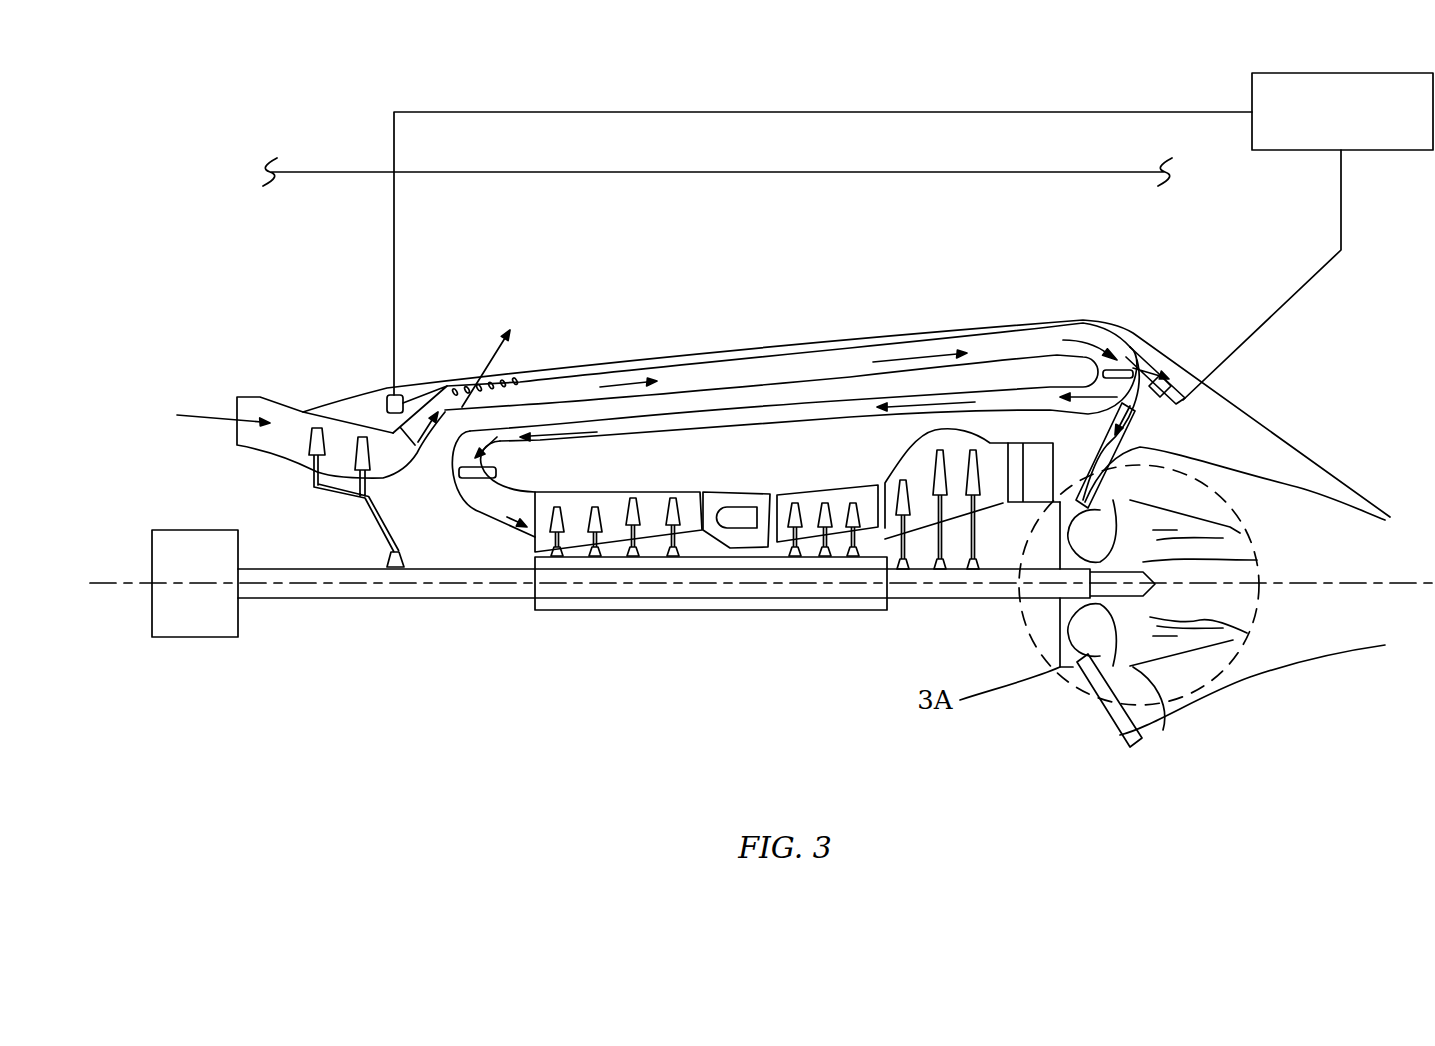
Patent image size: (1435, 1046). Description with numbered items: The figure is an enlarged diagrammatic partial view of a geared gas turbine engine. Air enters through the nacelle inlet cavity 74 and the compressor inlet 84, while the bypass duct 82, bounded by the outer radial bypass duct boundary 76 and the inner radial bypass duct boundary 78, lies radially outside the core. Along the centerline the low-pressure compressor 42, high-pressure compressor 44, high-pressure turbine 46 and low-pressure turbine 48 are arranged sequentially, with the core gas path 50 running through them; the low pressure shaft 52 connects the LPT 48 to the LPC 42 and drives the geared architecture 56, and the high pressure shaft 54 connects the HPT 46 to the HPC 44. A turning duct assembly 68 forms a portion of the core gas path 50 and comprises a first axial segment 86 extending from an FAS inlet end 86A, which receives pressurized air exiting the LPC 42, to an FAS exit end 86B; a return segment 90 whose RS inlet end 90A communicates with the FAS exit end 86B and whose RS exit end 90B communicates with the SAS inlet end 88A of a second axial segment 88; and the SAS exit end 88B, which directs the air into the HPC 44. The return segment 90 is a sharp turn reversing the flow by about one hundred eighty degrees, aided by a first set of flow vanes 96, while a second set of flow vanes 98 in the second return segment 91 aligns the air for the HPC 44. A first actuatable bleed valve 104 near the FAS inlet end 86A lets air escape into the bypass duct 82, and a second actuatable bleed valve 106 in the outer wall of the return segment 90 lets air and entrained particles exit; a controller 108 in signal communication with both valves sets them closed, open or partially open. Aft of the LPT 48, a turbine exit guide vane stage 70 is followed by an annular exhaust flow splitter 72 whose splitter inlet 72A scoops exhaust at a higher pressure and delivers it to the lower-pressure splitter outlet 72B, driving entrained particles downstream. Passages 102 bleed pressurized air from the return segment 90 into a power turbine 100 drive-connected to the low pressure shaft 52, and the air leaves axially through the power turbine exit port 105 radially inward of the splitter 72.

The low-pressure compressor 42 is at (338, 497).
The high-pressure compressor 44 is at (582, 552).
The high-pressure turbine 46 is at (812, 543).
The low-pressure turbine 48 is at (913, 448).
The core gas path 50 is at (752, 500).
The low pressure shaft 52 is at (312, 600).
The high pressure shaft 54 is at (678, 610).
The geared architecture 56 is at (182, 624).
The turning duct assembly 68 is at (703, 340).
The turbine exit guide vane stage 70 is at (1030, 443).
The annular exhaust flow splitter 72 is at (1133, 517).
The splitter inlet 72A is at (1040, 502).
The splitter outlet 72B is at (1240, 533).
The nacelle inlet cavity 74 is at (82, 473).
The outer radial bypass duct boundary 76 is at (518, 172).
The inner radial bypass duct boundary 78 is at (768, 347).
The bypass duct 82 is at (620, 298).
The compressor inlet 84 is at (230, 408).
The first axial segment 86 is at (838, 345).
The FAS inlet end 86A is at (410, 442).
The FAS exit end 86B is at (1083, 330).
The second axial segment 88 is at (840, 425).
The SAS inlet end 88A is at (1036, 453).
The SAS exit end 88B is at (523, 538).
The return segment 90 is at (1120, 327).
The RS inlet end 90A is at (1088, 330).
The RS exit end 90B is at (1120, 455).
The second return segment 91 is at (457, 522).
The first set of flow vanes 96 is at (1058, 355).
The second set of flow vanes 98 is at (497, 472).
The power turbine 100 is at (1053, 625).
The passages 102 is at (1125, 430).
The first actuatable bleed valve 104 is at (468, 380).
The power turbine exit port 105 is at (1257, 560).
The second actuatable bleed valve 106 is at (1180, 360).
The controller 108 is at (1325, 140).